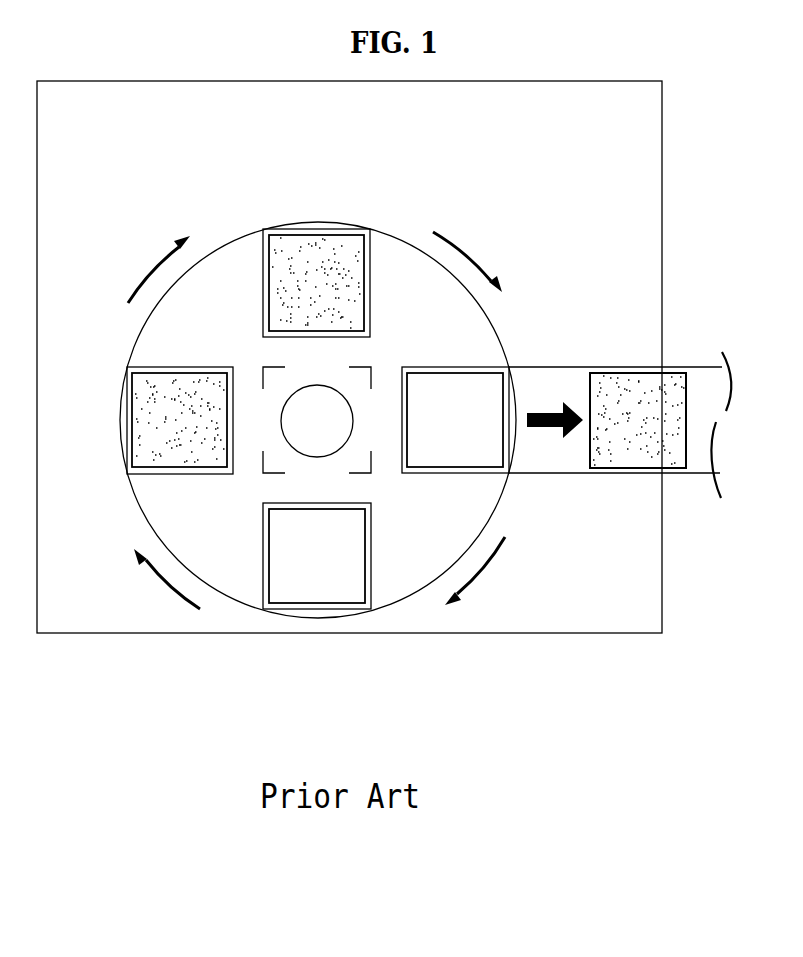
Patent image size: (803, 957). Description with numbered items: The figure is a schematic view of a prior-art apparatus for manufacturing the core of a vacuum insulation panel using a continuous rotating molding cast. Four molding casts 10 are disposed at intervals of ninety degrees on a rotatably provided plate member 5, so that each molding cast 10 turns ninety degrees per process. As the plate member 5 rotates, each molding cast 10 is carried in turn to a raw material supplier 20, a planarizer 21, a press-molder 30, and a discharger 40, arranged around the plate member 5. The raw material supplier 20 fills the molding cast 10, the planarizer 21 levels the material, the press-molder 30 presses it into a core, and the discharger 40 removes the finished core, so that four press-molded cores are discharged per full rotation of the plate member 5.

The plate member 5 is at (663, 200).
The molding cast 10 is at (318, 232).
The raw material supplier 20 is at (345, 535).
The planarizer 21 is at (178, 387).
The press-molder 30 is at (340, 268).
The discharger 40 is at (568, 366).